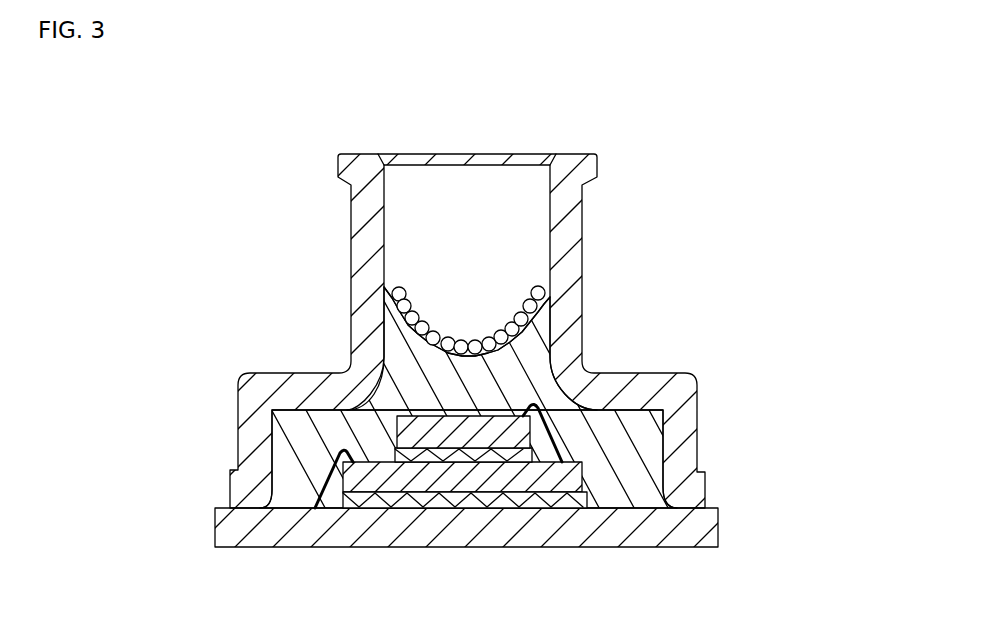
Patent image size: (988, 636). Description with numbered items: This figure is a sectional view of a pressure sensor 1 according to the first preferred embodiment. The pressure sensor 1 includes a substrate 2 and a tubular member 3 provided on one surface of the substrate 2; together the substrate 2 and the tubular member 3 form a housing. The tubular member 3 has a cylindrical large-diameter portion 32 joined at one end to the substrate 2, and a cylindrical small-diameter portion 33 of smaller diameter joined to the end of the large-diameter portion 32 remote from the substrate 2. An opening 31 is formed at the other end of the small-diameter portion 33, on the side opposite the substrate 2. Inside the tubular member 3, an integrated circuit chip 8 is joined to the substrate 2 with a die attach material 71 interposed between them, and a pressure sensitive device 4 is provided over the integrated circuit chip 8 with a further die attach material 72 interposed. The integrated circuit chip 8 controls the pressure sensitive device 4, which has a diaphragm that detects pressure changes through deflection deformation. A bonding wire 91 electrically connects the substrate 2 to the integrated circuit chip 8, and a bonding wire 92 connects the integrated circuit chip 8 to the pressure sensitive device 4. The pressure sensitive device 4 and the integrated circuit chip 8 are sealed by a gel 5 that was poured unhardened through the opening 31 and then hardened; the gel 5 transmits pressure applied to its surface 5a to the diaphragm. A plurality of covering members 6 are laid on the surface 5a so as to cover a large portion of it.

The pressure sensor 1 is at (710, 100).
The substrate 2 is at (703, 528).
The tubular member 3 is at (494, 318).
The opening 31 is at (477, 154).
The large-diameter portion 32 is at (247, 433).
The small-diameter portion 33 is at (352, 298).
The pressure sensitive device 4 is at (495, 416).
The gel 5 is at (551, 360).
The surface 5a is at (536, 330).
The covering members 6 is at (546, 291).
The integrated circuit chip 8 is at (588, 478).
The die attach material 71 is at (395, 504).
The die attach material 72 is at (442, 468).
The bonding wire 91 is at (332, 480).
The bonding wire 92 is at (566, 456).